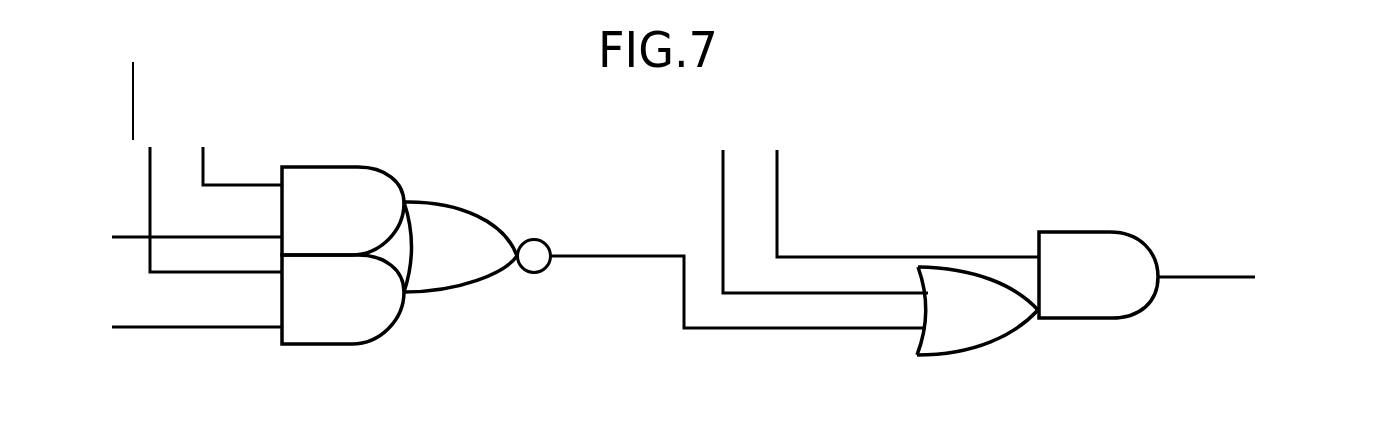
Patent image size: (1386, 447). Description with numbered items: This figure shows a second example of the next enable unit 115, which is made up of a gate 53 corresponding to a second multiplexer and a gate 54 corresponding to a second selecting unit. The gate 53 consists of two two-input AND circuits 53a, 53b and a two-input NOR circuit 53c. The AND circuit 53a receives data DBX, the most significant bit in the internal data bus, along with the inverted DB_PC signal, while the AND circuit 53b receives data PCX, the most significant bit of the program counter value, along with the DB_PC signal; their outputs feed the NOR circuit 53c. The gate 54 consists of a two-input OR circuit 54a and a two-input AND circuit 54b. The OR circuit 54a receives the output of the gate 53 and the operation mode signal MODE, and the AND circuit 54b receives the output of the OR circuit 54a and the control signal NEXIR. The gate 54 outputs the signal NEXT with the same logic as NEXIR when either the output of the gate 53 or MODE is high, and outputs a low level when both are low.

The next enable unit 115 is at (975, 162).
The gate 53 is at (413, 313).
The two-input AND circuit 53a is at (393, 178).
The two-input AND circuit 53b is at (349, 345).
The two-input NOR circuit 53c is at (517, 230).
The gate 54 is at (1048, 337).
The two-input OR circuit 54a is at (978, 357).
The two-input AND circuit 54b is at (1151, 246).